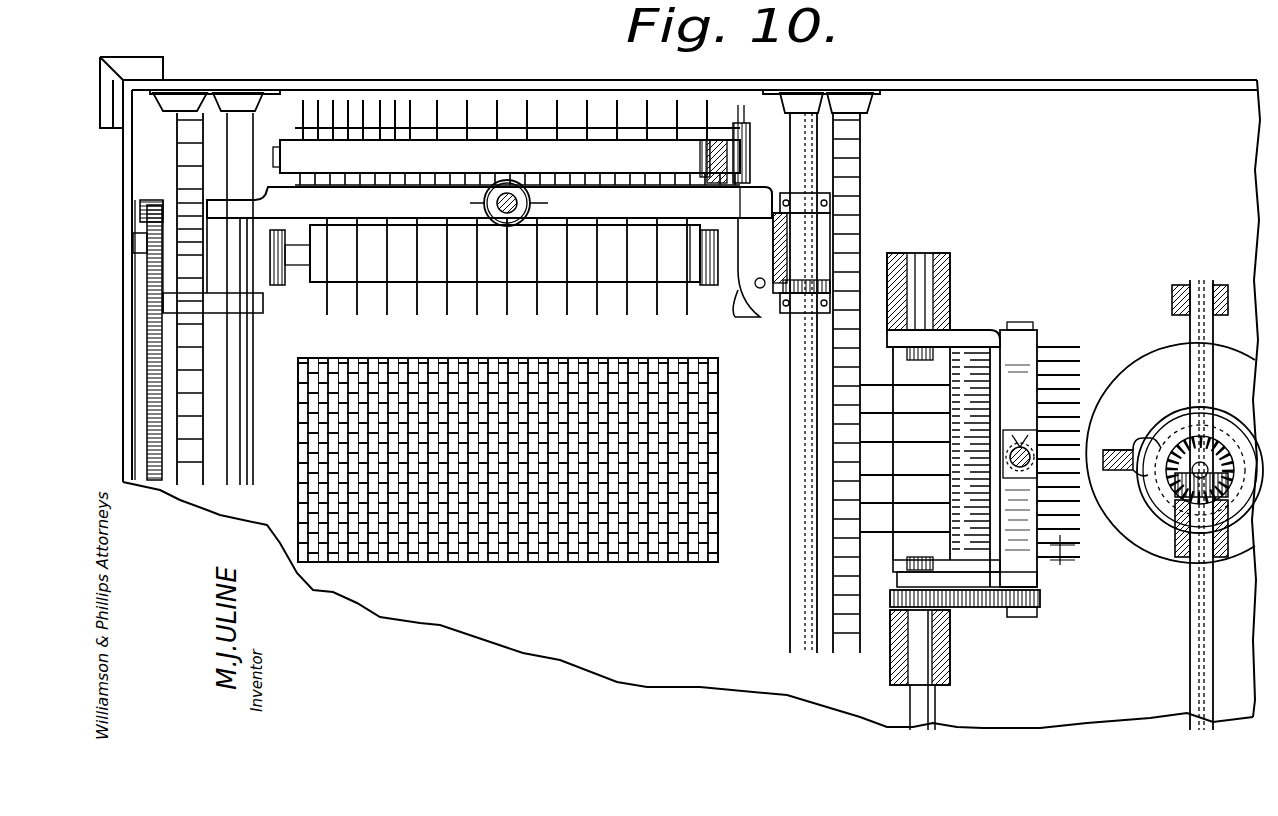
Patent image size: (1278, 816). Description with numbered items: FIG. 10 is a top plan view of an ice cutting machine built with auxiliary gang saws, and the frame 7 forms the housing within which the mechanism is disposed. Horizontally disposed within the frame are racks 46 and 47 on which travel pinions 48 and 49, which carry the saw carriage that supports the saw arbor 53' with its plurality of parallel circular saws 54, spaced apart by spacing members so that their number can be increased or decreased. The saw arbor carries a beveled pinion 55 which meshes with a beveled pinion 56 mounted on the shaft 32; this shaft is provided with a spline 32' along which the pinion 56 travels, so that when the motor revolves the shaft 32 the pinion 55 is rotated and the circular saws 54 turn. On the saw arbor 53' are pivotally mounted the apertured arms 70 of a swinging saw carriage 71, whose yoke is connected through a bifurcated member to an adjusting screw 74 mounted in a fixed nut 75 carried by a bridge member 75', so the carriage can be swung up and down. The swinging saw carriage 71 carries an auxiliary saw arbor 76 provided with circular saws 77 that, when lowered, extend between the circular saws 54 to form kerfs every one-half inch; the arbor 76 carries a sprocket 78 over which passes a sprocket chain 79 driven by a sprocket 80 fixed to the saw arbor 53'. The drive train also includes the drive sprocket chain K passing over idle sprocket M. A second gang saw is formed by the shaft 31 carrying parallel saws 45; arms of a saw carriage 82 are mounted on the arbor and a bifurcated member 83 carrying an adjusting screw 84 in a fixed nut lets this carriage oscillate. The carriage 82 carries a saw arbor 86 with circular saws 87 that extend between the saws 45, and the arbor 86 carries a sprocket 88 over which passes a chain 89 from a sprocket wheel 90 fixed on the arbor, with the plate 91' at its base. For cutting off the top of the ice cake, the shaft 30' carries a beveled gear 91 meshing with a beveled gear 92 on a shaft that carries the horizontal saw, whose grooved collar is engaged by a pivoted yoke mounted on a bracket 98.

The frame 7 is at (196, 90).
The circular saws 77 is at (462, 100).
The auxiliary saw arbor 76 is at (627, 132).
The sprocket 78 is at (735, 138).
The sprocket chain 79 is at (748, 150).
The swinging saw carriage 71 is at (506, 162).
The adjusting screw 74 is at (470, 205).
The fixed nut 75 is at (530, 203).
The bridge member 75' is at (711, 202).
The beveled pinion 55 is at (830, 203).
The pinion 48 is at (860, 240).
The beveled pinion 56 is at (833, 270).
The shaft 31 is at (950, 266).
The base plate 91' is at (943, 323).
The saw carriage 82 is at (1022, 340).
The saw arbor 86 is at (1045, 350).
The adjusting screw 84 is at (1022, 430).
The bracket 98 is at (1131, 448).
The pinion 49 is at (171, 222).
The idle sprocket M is at (149, 250).
The drive sprocket chain K is at (150, 335).
The rack 47 is at (190, 360).
The apertured arms 70 is at (288, 285).
The circular saws 54 is at (515, 295).
The saw arbor 53' is at (672, 287).
The sprocket 80 is at (748, 320).
The shaft 32 is at (779, 383).
The spline 32' is at (780, 393).
The rack 46 is at (847, 427).
The saws 45 is at (873, 502).
The bifurcated member 83 is at (1000, 478).
The circular saws 87 is at (1068, 561).
The beveled gear 92 is at (1183, 485).
The beveled gear 91 is at (1168, 562).
The sprocket 88 is at (1040, 617).
The chain 89 is at (980, 607).
The sprocket wheel 90 is at (890, 615).
The shaft 30' is at (1178, 505).